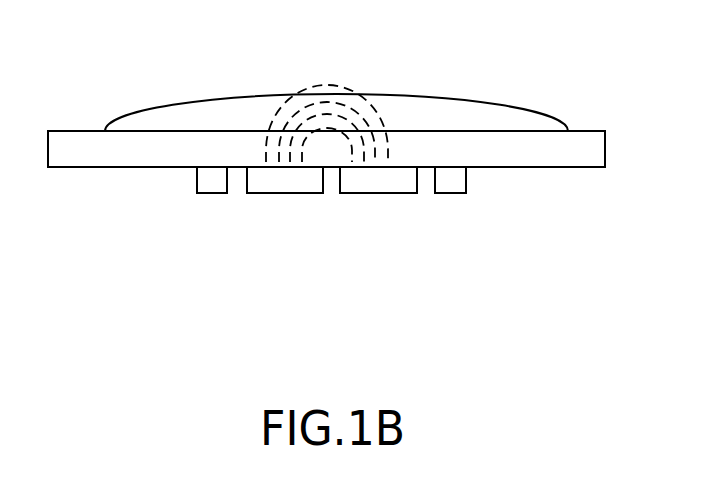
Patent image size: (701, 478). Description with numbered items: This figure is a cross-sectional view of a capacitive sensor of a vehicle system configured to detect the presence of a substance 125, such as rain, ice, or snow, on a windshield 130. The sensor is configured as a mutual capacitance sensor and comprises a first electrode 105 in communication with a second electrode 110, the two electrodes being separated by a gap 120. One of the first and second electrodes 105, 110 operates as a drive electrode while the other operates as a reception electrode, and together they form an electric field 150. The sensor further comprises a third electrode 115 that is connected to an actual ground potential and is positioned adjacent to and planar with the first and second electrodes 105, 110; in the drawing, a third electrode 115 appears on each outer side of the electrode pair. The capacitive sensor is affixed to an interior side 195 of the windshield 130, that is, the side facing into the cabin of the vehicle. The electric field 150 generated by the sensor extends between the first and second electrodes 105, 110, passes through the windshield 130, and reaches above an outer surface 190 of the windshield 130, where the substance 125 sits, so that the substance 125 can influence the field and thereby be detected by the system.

The first electrode 105 is at (390, 182).
The second electrode 110 is at (282, 182).
The third electrode 115 is at (213, 182).
The gap 120 is at (336, 200).
The substance 125 is at (172, 105).
The windshield 130 is at (605, 148).
The electric field 150 is at (372, 113).
The outer surface 190 is at (68, 110).
The interior side 195 is at (91, 187).